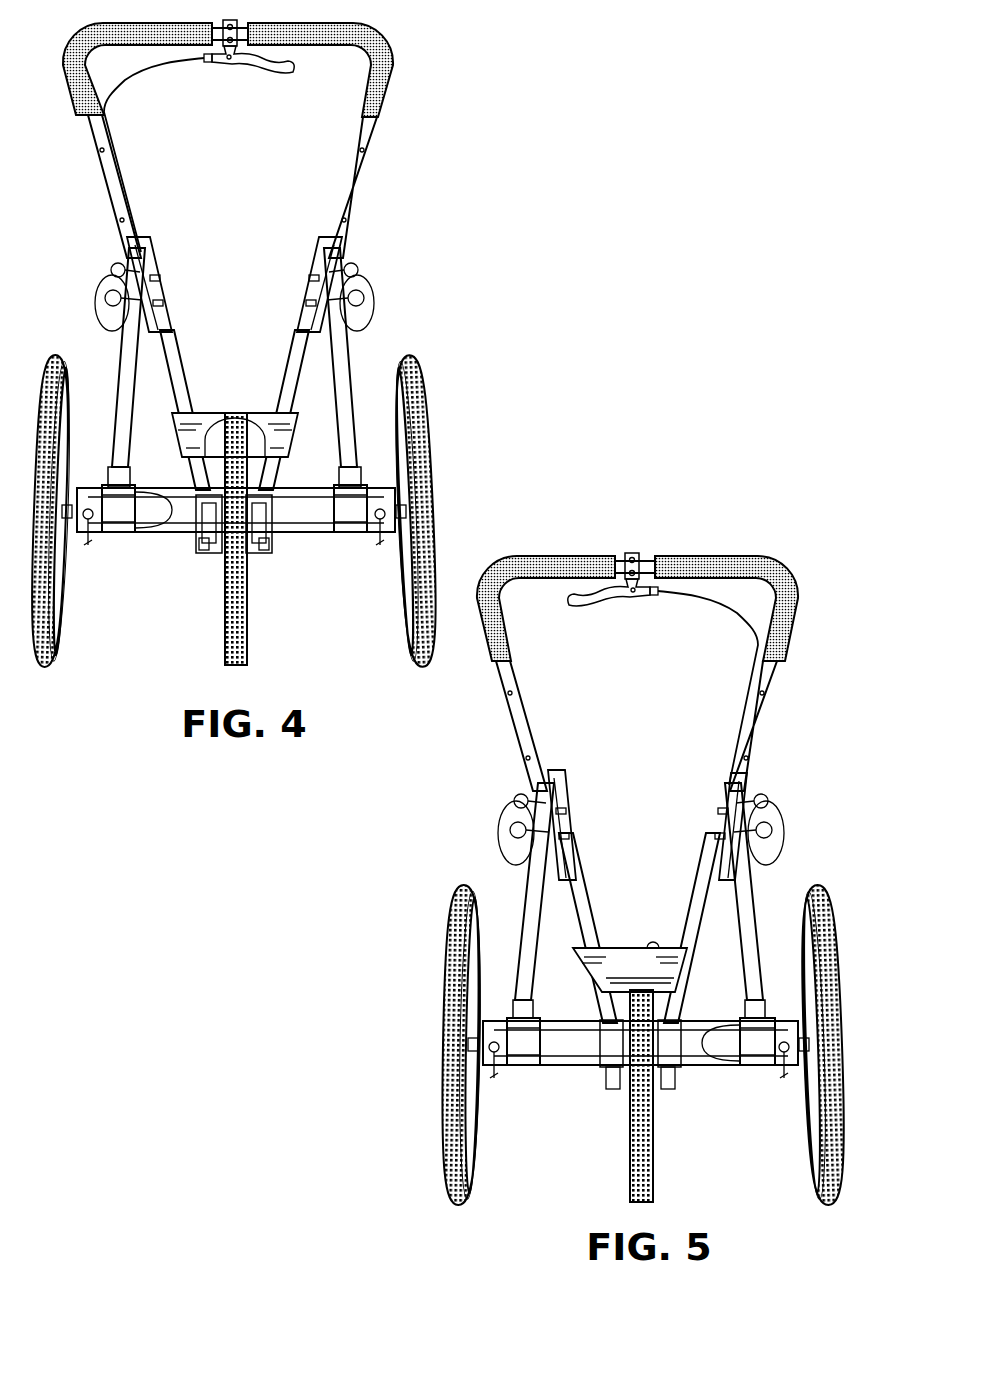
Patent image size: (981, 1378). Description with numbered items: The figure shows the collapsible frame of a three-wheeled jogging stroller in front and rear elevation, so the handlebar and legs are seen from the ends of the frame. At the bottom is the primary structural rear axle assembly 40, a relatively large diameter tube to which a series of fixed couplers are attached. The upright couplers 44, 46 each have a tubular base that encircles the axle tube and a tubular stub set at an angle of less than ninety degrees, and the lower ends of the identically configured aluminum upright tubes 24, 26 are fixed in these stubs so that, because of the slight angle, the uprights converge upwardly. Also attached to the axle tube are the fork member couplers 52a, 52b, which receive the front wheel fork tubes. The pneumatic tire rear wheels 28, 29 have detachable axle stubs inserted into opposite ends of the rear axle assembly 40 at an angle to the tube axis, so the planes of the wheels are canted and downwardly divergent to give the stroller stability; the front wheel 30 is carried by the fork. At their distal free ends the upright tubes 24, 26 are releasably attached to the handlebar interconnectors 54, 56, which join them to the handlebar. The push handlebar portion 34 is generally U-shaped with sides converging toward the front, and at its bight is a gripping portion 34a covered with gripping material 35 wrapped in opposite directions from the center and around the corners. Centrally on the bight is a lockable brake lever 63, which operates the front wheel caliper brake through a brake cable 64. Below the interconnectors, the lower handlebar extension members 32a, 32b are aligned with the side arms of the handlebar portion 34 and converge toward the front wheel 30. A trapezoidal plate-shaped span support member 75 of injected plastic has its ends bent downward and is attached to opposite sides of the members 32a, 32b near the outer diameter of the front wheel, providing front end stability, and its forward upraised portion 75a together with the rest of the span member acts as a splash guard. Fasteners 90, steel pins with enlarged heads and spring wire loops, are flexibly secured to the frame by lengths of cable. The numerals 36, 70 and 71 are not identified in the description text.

In FIG. 4, the upright tube 24 is at (100, 358).
In FIG. 5, the upright tube 24 is at (773, 896).
In FIG. 4, the upright tube 26 is at (353, 358).
In FIG. 5, the upright tube 26 is at (496, 900).
In FIG. 4, the rear wheel 28 is at (52, 668).
In FIG. 5, the rear wheel 28 is at (822, 1022).
In FIG. 4, the rear wheel 29 is at (434, 428).
In FIG. 5, the rear wheel 29 is at (443, 1045).
In FIG. 4, the front wheel 30 is at (224, 620).
In FIG. 5, the front wheel 30 is at (611, 1096).
In FIG. 4, the lower handlebar extension member 32a is at (178, 366).
In FIG. 5, the lower handlebar extension member 32a is at (672, 928).
In FIG. 4, the lower handlebar extension member 32b is at (292, 340).
In FIG. 5, the lower handlebar extension member 32b is at (604, 928).
In FIG. 5, the push handlebar portion 34 is at (636, 676).
In FIG. 5, the gripping portion 34a is at (637, 575).
In FIG. 5, the gripping material 35 is at (642, 576).
In FIG. 4, the handle 36 is at (372, 168).
In FIG. 4, the rear axle assembly 40 is at (290, 518).
In FIG. 5, the rear axle assembly 40 is at (638, 1075).
In FIG. 4, the upright coupler 44 is at (100, 480).
In FIG. 5, the upright coupler 44 is at (763, 1079).
In FIG. 4, the upright coupler 46 is at (382, 478).
In FIG. 5, the upright coupler 46 is at (519, 1090).
In FIG. 5, the fork member coupler 52a is at (691, 1079).
In FIG. 5, the fork member coupler 52b is at (604, 1080).
In FIG. 4, the handlebar interconnector 54 is at (119, 252).
In FIG. 5, the handlebar interconnector 54 is at (702, 826).
In FIG. 4, the handlebar interconnector 56 is at (348, 253).
In FIG. 5, the handlebar interconnector 56 is at (560, 818).
In FIG. 4, the lockable brake lever 63 is at (241, 68).
In FIG. 5, the lockable brake lever 63 is at (617, 600).
In FIG. 4, the brake cable 64 is at (138, 76).
In FIG. 5, the brake cable 64 is at (704, 686).
In FIG. 4, the mounting bracket 70 is at (194, 537).
In FIG. 4, the mounting bracket 71 is at (258, 562).
In FIG. 4, the span support member 75 is at (284, 413).
In FIG. 5, the span support member 75 is at (630, 941).
In FIG. 4, the upraised portion 75a is at (199, 412).
In FIG. 4, the fastener 90 is at (98, 546).